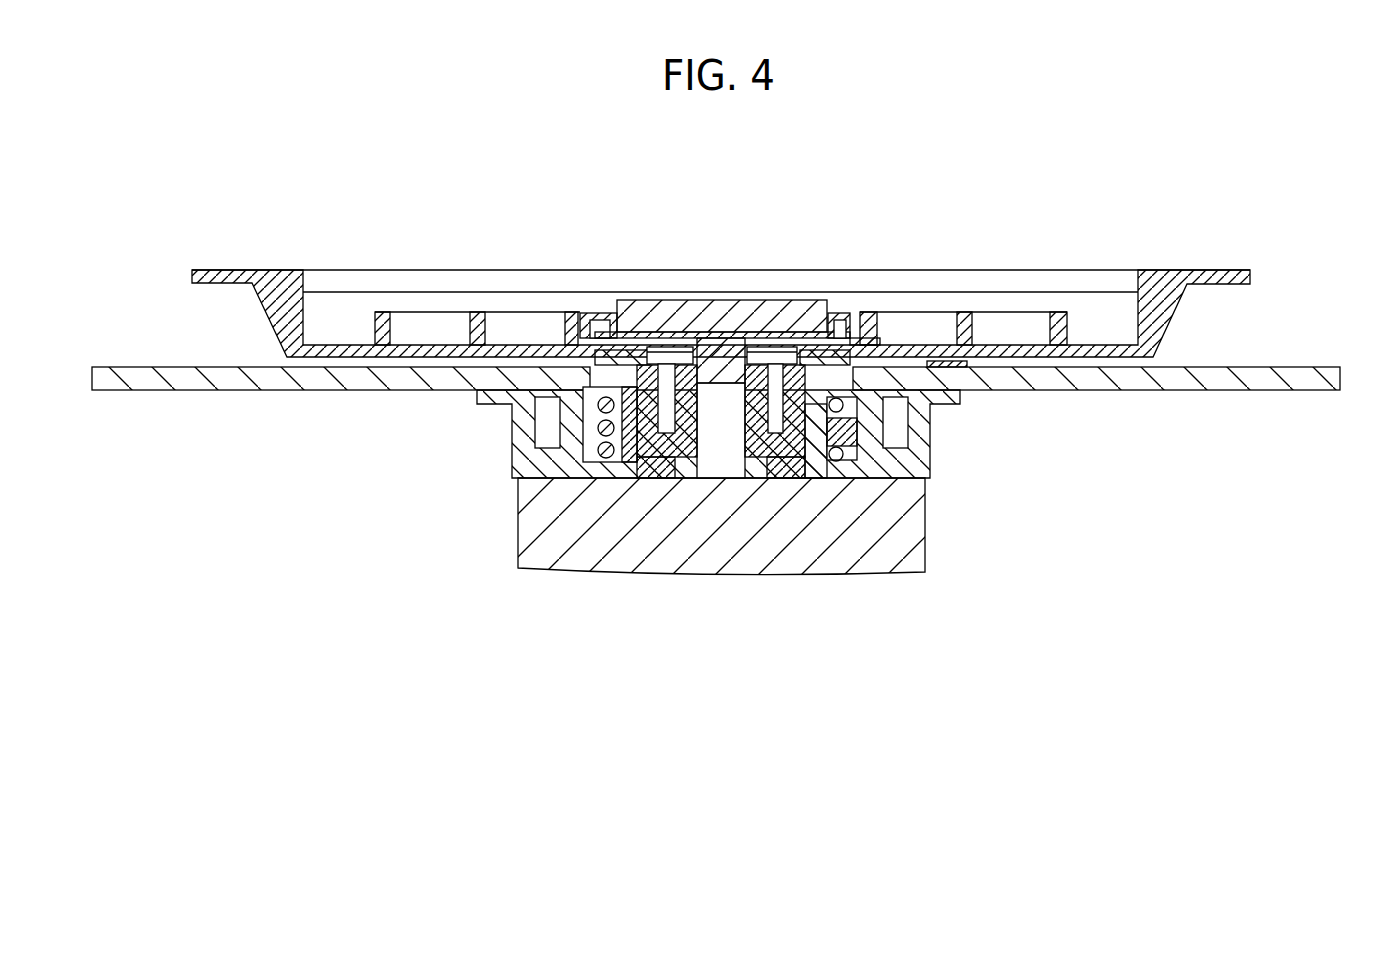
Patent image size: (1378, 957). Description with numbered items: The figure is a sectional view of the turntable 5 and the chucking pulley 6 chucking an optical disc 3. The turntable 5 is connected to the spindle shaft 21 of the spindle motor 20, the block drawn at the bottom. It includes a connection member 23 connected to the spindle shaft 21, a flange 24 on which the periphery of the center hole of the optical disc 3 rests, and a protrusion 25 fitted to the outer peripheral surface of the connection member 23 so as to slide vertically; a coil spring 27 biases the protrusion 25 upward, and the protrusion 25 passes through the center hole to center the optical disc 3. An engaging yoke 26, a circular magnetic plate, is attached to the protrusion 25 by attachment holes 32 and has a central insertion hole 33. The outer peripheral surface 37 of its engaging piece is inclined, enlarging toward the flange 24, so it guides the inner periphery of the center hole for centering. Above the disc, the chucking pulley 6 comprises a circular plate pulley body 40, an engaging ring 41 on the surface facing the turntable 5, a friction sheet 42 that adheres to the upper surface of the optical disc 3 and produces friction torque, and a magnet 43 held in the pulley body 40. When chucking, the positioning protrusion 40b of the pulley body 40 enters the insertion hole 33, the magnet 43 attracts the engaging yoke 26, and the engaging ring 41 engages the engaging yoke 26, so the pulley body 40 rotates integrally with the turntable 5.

The optical disc 3 is at (1324, 385).
The turntable 5 is at (1008, 471).
The chucking pulley 6 is at (1233, 263).
The spindle motor 20 is at (526, 538).
The spindle shaft 21 is at (728, 396).
The connection member 23 is at (781, 476).
The flange 24 is at (962, 401).
The protrusion 25 is at (842, 430).
The engaging yoke 26 is at (833, 340).
The coil spring 27 is at (598, 437).
The attachment holes 32 is at (656, 346).
The insertion hole 33 is at (722, 340).
The outer peripheral surface 37 is at (600, 324).
The pulley body 40 is at (282, 286).
The positioning protrusion 40b is at (720, 422).
The engaging ring 41 is at (880, 350).
The friction sheet 42 is at (950, 360).
The magnet 43 is at (788, 309).